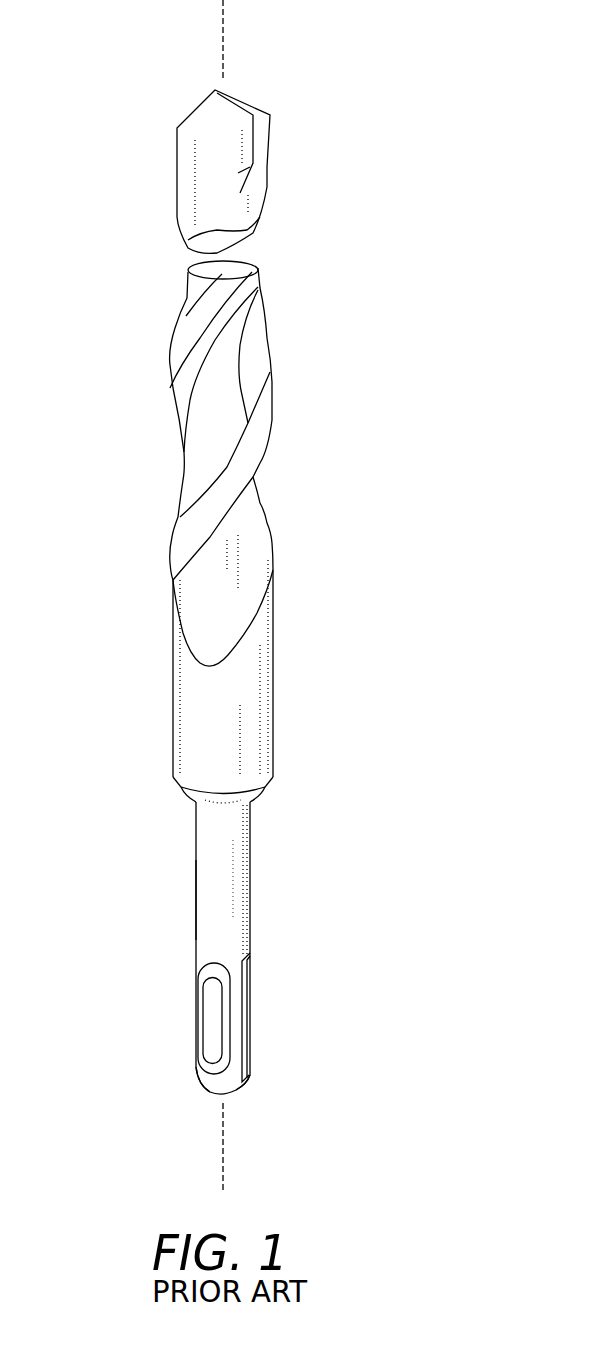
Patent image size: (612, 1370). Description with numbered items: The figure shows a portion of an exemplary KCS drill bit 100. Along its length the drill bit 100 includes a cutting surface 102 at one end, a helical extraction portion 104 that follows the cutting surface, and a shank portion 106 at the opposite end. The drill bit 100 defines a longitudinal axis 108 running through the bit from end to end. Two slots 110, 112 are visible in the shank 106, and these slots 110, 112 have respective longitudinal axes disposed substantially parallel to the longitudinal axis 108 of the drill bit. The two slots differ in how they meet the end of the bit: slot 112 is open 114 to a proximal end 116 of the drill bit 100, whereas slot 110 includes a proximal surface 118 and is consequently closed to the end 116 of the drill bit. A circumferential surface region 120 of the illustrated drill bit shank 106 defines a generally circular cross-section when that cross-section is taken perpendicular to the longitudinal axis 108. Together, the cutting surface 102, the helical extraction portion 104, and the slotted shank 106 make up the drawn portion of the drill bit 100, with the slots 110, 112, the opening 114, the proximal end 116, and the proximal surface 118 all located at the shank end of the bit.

The drill bit 100 is at (280, 596).
The cutting surface 102 is at (187, 118).
The helical extraction portion 104 is at (253, 338).
The shank portion 106 is at (233, 967).
The longitudinal axis 108 is at (222, 1147).
The slot 110 is at (207, 1022).
The slot 112 is at (250, 1007).
The open 114 is at (272, 1073).
The proximal end 116 is at (208, 1083).
The proximal surface 118 is at (207, 1048).
The circumferential surface region 120 is at (210, 898).